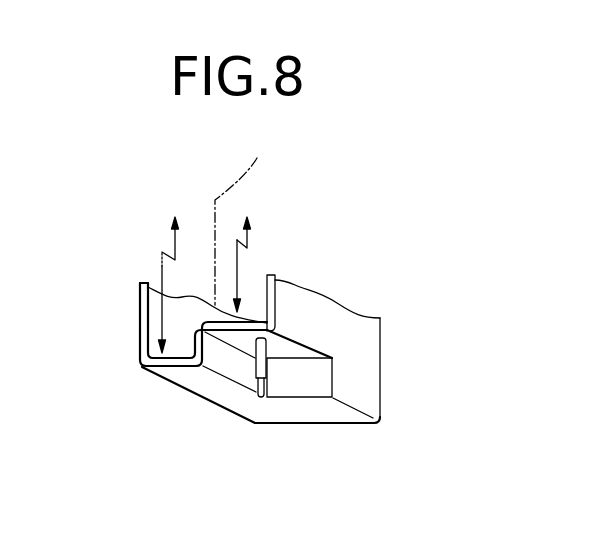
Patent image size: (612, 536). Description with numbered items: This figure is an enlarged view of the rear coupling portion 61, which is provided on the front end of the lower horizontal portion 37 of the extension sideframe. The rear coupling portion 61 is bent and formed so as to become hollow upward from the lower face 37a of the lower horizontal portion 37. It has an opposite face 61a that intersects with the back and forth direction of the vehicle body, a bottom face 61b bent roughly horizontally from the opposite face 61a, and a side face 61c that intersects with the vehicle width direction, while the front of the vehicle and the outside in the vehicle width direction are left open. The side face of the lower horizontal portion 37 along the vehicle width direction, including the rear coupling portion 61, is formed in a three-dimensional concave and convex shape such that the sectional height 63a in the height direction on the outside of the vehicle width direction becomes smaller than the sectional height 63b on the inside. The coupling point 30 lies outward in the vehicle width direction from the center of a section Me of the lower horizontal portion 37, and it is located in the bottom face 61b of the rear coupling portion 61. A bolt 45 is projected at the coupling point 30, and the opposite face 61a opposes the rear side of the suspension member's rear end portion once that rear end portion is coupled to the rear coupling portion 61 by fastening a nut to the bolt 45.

The center of a section Me is at (246, 216).
The sectional height 63b is at (162, 252).
The sectional height 63a is at (248, 243).
The coupling point 30 is at (268, 328).
The rear coupling portion 61 is at (280, 385).
The side face 61c is at (215, 362).
The bottom face 61b is at (308, 352).
The opposite face 61a is at (323, 382).
The bolt 45 is at (256, 366).
The lower horizontal portion 37 is at (282, 425).
The lower face 37a is at (337, 415).